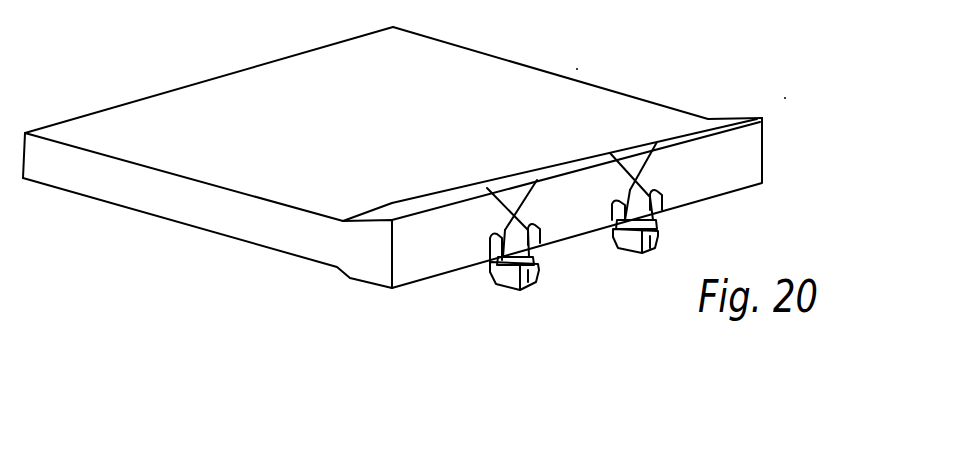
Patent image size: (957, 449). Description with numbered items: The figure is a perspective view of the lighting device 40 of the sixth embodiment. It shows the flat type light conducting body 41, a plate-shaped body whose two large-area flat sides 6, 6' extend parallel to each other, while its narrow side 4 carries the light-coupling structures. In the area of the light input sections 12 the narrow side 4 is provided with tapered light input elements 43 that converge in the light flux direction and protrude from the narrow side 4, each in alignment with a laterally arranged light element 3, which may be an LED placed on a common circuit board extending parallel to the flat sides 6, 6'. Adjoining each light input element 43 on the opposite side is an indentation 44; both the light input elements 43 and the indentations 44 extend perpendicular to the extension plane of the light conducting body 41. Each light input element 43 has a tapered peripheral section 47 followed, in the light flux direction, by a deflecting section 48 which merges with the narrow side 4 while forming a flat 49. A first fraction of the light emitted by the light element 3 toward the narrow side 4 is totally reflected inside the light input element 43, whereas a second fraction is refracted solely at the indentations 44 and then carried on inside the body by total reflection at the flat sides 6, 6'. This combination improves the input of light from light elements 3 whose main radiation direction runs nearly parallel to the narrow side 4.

The lighting device 40 is at (148, 268).
The flat side 6' is at (207, 257).
The narrow side 4 is at (426, 257).
The flat type light conducting body 41 is at (173, 105).
The flat side 6 is at (520, 59).
The deflecting section 48 is at (637, 162).
The flat 49 is at (576, 171).
The light input section 12 is at (627, 132).
The light input element 43 is at (518, 247).
The light element 3 is at (505, 284).
The tapered peripheral section 47 is at (645, 195).
The indentation 44 is at (663, 204).